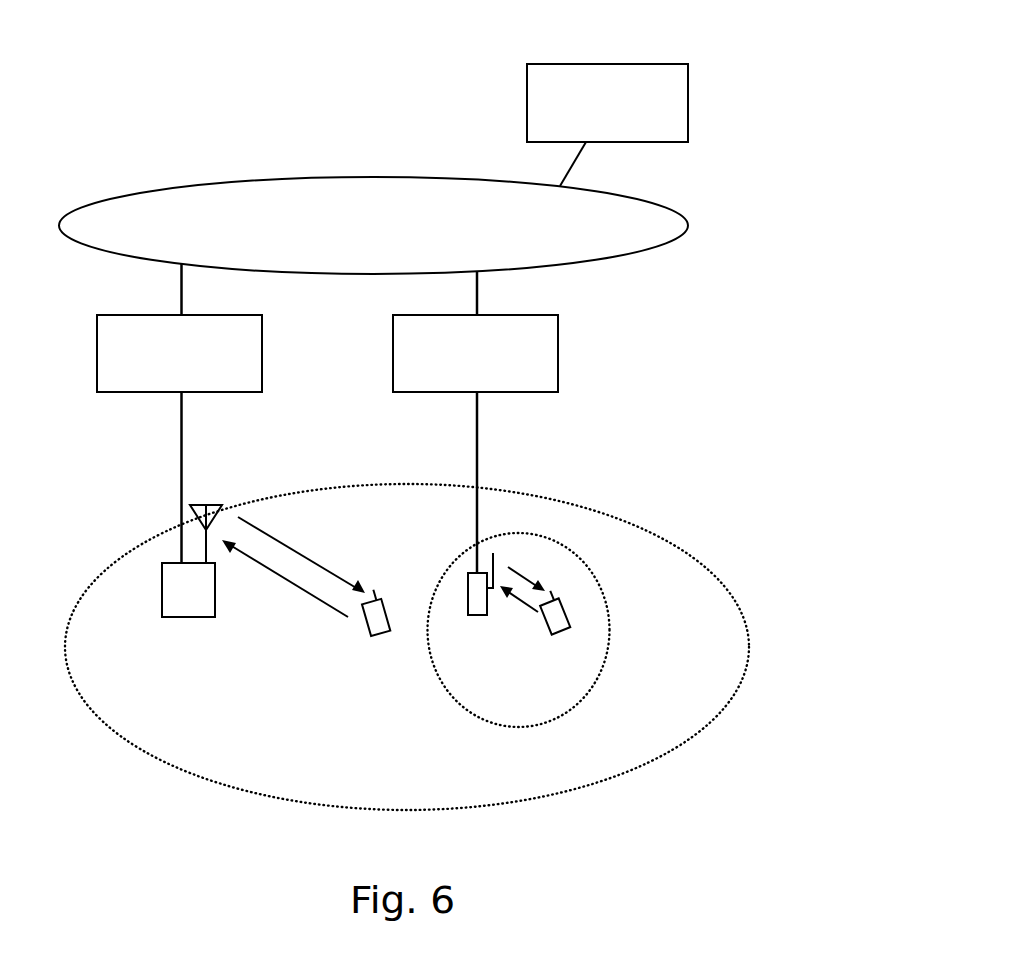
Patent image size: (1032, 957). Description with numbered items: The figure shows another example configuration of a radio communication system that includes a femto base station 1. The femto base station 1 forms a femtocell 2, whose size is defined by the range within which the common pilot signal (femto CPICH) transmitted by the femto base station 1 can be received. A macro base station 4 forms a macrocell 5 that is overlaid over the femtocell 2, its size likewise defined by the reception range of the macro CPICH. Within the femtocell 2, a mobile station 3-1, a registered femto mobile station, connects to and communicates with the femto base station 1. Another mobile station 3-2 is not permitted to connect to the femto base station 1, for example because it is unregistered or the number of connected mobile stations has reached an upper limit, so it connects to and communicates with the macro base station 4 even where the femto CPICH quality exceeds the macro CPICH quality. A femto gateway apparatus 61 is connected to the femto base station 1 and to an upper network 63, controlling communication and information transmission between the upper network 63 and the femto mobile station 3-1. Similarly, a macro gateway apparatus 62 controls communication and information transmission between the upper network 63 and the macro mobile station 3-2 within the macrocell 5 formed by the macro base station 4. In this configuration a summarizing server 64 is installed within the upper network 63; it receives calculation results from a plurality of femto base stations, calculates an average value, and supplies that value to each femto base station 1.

The femto base station 1 is at (468, 578).
The femtocell 2 is at (598, 578).
The mobile station 3-1 is at (549, 632).
The mobile station 3-2 is at (372, 634).
The macro base station 4 is at (215, 603).
The macrocell 5 is at (598, 510).
The femto gateway apparatus 61 is at (558, 343).
The macro gateway apparatus 62 is at (262, 343).
The upper network 63 is at (398, 176).
The summarizing server 64 is at (571, 63).